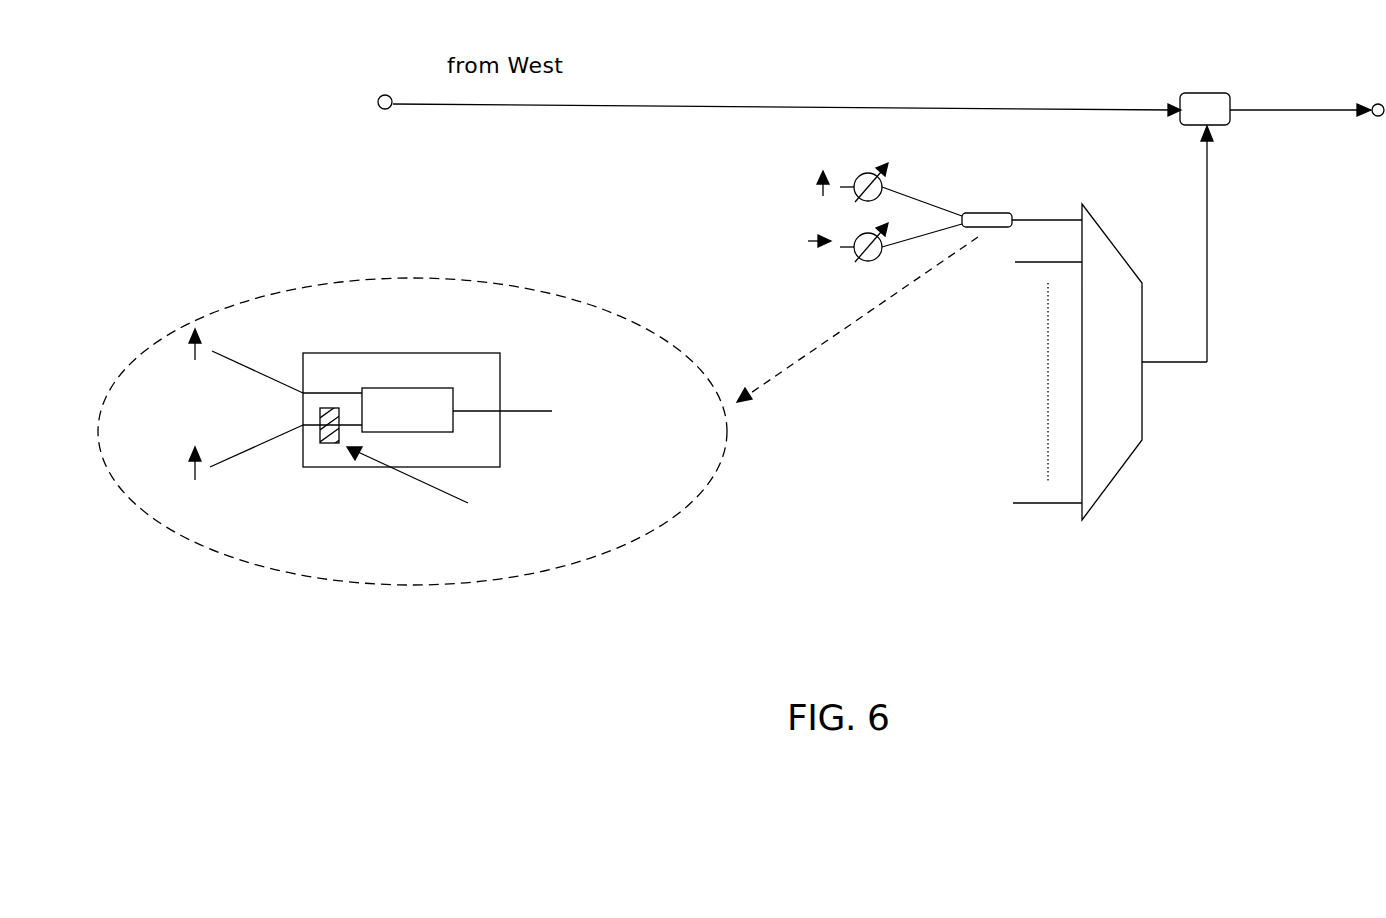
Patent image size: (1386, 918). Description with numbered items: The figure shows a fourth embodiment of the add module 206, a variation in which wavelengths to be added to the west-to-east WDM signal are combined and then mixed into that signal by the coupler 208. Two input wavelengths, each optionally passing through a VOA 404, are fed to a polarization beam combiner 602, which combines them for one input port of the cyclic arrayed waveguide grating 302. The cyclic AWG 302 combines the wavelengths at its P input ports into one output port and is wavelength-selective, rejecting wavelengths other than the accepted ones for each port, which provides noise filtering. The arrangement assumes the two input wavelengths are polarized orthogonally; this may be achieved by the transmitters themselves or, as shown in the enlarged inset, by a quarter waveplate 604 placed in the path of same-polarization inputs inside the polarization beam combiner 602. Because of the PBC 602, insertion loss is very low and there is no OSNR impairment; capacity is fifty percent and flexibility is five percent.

The add module 206 is at (1106, 652).
The coupler 208 is at (1216, 104).
The cyclic arrayed waveguide grating 302 is at (1127, 262).
The VOA 404 is at (884, 182).
The polarization beam combiner 602 is at (1012, 228).
The quarter waveplate 604 is at (330, 445).